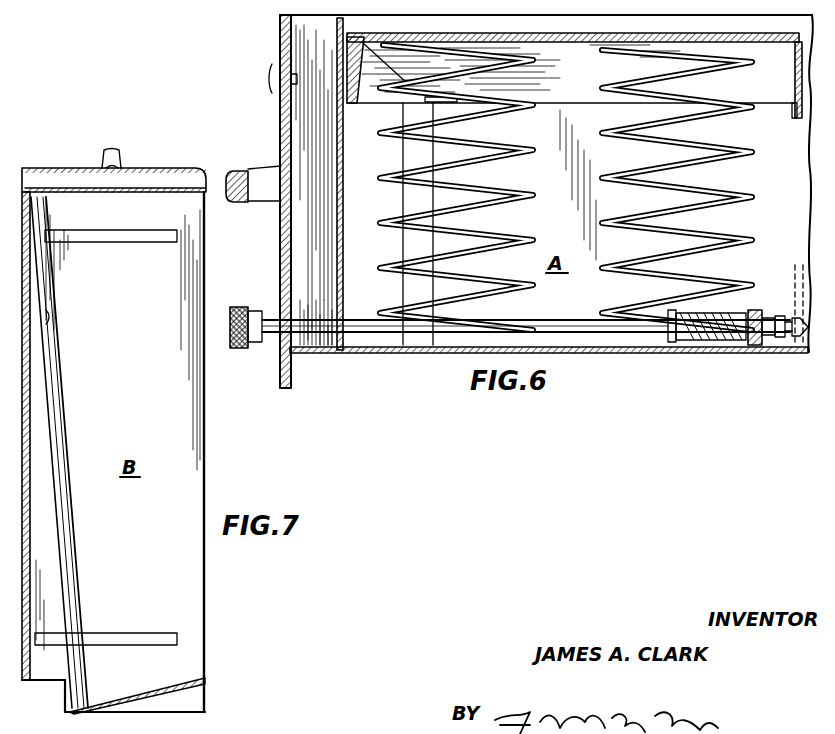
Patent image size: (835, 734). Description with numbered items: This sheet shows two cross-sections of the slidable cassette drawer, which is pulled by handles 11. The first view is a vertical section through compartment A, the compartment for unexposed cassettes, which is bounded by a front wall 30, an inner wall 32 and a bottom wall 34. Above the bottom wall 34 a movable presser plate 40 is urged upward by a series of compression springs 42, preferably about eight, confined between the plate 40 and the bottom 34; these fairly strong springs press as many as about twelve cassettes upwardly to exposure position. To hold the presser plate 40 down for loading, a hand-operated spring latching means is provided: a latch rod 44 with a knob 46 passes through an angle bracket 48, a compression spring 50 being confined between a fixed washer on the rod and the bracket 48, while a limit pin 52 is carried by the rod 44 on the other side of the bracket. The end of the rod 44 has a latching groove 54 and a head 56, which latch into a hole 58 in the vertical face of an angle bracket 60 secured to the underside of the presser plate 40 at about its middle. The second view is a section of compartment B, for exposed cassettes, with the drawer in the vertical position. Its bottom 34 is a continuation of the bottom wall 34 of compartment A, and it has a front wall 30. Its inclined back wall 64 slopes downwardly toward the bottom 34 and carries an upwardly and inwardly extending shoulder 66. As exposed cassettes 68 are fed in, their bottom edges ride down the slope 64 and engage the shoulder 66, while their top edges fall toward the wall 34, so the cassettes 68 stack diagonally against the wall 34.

In FIG. 6, the handles 11 is at (251, 170).
In FIG. 7, the handles 11 is at (112, 150).
In FIG. 6, the front wall 30 is at (281, 123).
In FIG. 7, the front wall 30 is at (161, 169).
In FIG. 6, the inner wall 32 is at (346, 95).
In FIG. 6, the bottom wall 34 is at (373, 353).
In FIG. 7, the bottom wall 34 is at (28, 452).
In FIG. 6, the presser plate 40 is at (552, 42).
In FIG. 6, the compression springs 42 is at (515, 192).
In FIG. 6, the latch rod 44 is at (555, 325).
In FIG. 6, the knob 46 is at (239, 349).
In FIG. 6, the angle bracket 48 is at (756, 347).
In FIG. 6, the compression spring 50 is at (720, 341).
In FIG. 6, the limit pin 52 is at (766, 309).
In FIG. 6, the latching groove 54 is at (777, 338).
In FIG. 6, the head 56 is at (791, 317).
In FIG. 6, the hole 58 is at (793, 108).
In FIG. 6, the angle bracket 60 is at (795, 73).
In FIG. 7, the inclined back wall 64 is at (179, 686).
In FIG. 7, the shoulder 66 is at (64, 703).
In FIG. 7, the exposed cassettes 68 is at (46, 316).